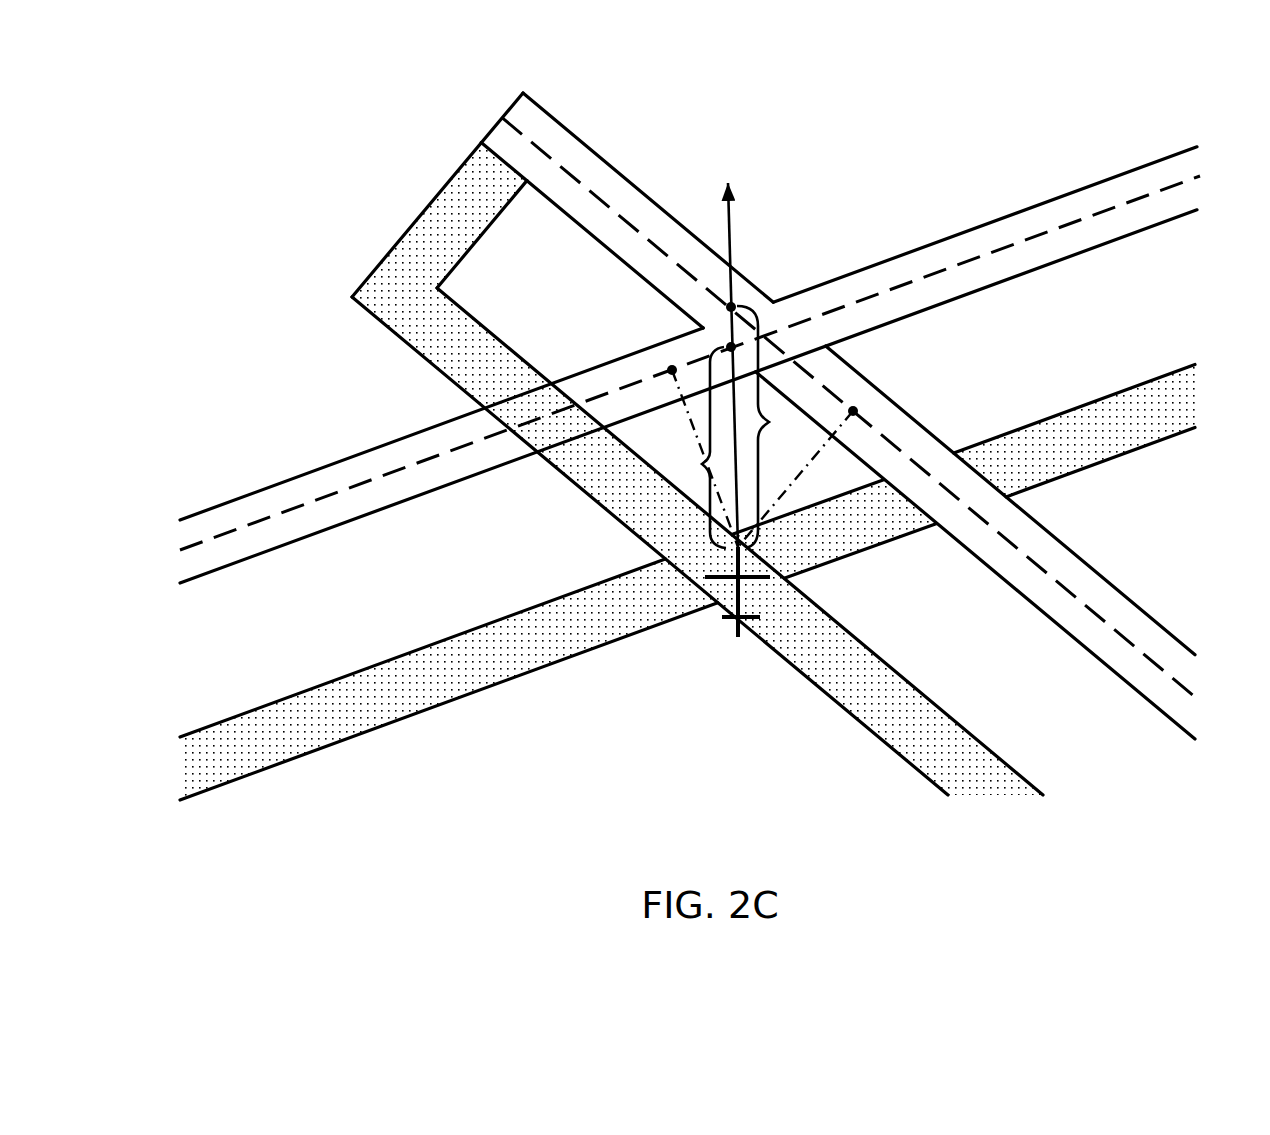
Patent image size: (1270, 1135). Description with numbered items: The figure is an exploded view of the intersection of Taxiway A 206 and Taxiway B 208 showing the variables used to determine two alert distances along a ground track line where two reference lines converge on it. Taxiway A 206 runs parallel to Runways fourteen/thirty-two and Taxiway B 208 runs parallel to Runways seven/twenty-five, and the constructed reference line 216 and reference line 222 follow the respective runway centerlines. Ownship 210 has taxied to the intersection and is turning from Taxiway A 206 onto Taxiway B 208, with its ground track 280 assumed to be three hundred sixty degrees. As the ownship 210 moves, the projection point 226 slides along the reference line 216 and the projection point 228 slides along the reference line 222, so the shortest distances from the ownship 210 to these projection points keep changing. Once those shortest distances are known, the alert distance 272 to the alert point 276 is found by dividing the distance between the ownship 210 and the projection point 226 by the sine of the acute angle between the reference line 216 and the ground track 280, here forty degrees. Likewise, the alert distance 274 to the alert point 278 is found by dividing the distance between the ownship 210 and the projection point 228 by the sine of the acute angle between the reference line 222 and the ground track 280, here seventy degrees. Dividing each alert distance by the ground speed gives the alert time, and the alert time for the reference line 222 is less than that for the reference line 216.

The Taxiway A 206 is at (835, 704).
The Taxiway B 208 is at (445, 705).
The ownship 210 is at (740, 652).
The reference line 216 is at (1092, 603).
The reference line 222 is at (400, 471).
The projection point 226 is at (860, 426).
The projection point 228 is at (663, 370).
The alert distance 272 is at (777, 421).
The alert distance 274 is at (701, 465).
The alert point 276 is at (737, 302).
The alert point 278 is at (724, 341).
The ground track 280 is at (728, 334).